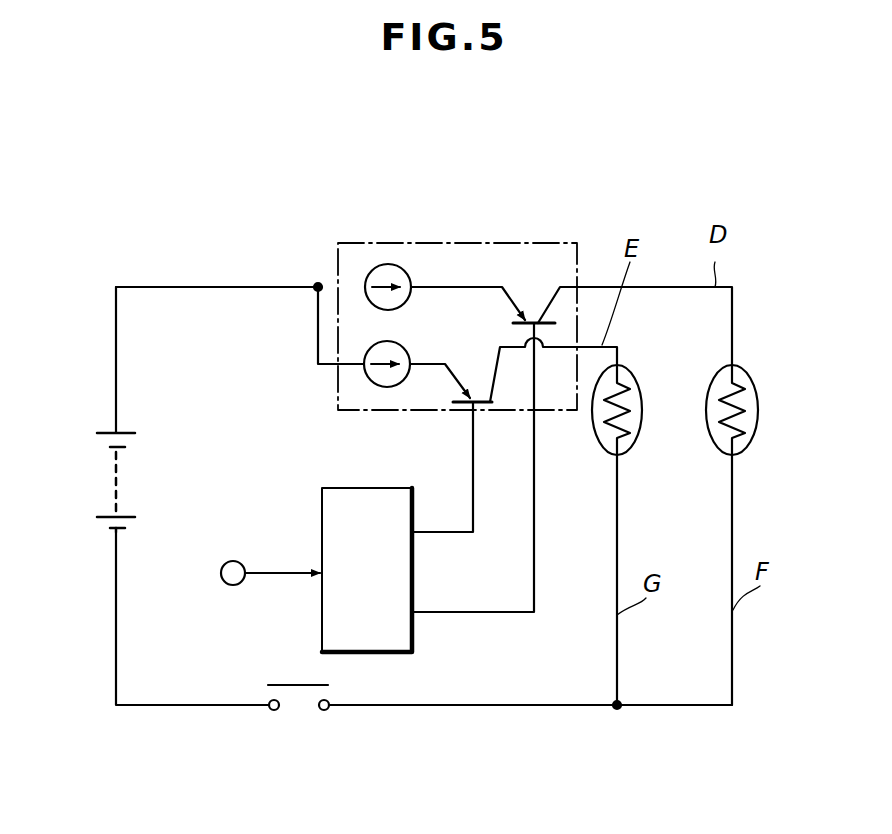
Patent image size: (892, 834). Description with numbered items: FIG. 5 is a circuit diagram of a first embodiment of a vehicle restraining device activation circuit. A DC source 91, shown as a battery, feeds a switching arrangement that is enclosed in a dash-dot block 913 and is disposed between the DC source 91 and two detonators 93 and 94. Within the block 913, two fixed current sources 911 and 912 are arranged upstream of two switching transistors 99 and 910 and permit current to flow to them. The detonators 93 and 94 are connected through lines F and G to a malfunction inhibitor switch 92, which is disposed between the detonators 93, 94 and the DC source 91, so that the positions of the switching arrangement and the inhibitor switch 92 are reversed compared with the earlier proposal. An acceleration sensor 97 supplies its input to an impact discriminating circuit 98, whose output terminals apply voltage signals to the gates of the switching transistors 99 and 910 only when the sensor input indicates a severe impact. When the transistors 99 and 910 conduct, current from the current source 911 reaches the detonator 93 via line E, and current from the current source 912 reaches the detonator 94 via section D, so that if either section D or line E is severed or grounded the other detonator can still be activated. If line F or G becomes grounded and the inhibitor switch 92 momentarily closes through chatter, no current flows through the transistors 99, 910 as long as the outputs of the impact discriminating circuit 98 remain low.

The DC source 91 is at (112, 475).
The malfunction inhibitor switch 92 is at (289, 680).
The detonator 93 is at (640, 419).
The detonator 94 is at (756, 419).
The acceleration sensor 97 is at (233, 560).
The impact discriminating circuit 98 is at (320, 512).
The switching transistor 99 is at (455, 406).
The switching transistor 910 is at (543, 275).
The fixed current source 911 is at (380, 376).
The fixed current source 912 is at (400, 270).
The current supply circuit block 913 is at (367, 238).